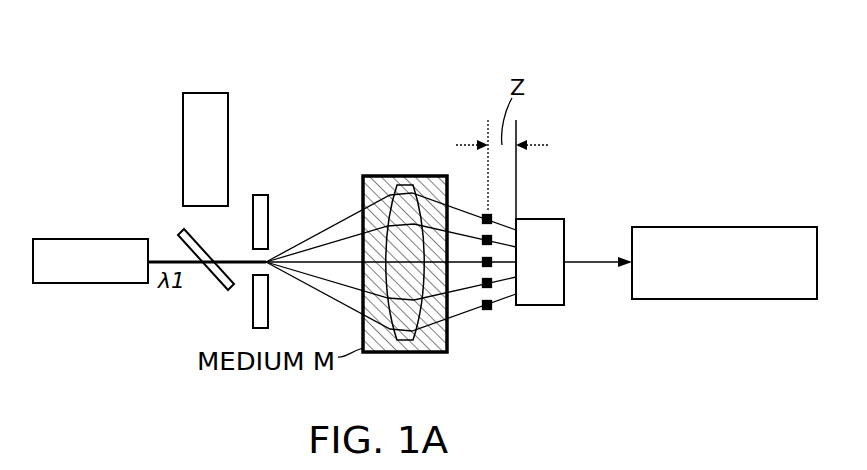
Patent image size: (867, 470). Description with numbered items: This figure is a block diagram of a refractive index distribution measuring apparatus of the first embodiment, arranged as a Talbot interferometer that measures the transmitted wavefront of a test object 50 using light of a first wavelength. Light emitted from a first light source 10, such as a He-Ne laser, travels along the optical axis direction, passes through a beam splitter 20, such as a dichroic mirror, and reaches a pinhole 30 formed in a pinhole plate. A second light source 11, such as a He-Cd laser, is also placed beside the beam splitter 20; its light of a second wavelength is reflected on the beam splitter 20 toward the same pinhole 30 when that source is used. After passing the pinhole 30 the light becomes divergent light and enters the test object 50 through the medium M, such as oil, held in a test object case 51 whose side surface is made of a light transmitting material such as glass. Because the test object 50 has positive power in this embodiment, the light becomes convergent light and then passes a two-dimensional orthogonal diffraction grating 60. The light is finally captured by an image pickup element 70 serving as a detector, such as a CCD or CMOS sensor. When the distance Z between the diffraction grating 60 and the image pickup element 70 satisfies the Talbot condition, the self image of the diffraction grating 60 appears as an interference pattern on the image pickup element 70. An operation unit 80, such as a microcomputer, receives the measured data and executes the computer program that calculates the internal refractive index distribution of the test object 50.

The first light source 10 is at (98, 239).
The second light source 11 is at (183, 172).
The beam splitter 20 is at (222, 288).
The pinhole 30 is at (268, 223).
The test object 50 is at (414, 185).
The test object case 51 is at (363, 173).
The two-dimensional orthogonal diffraction grating 60 is at (490, 308).
The image pickup element 70 is at (564, 240).
The operation unit 80 is at (662, 227).